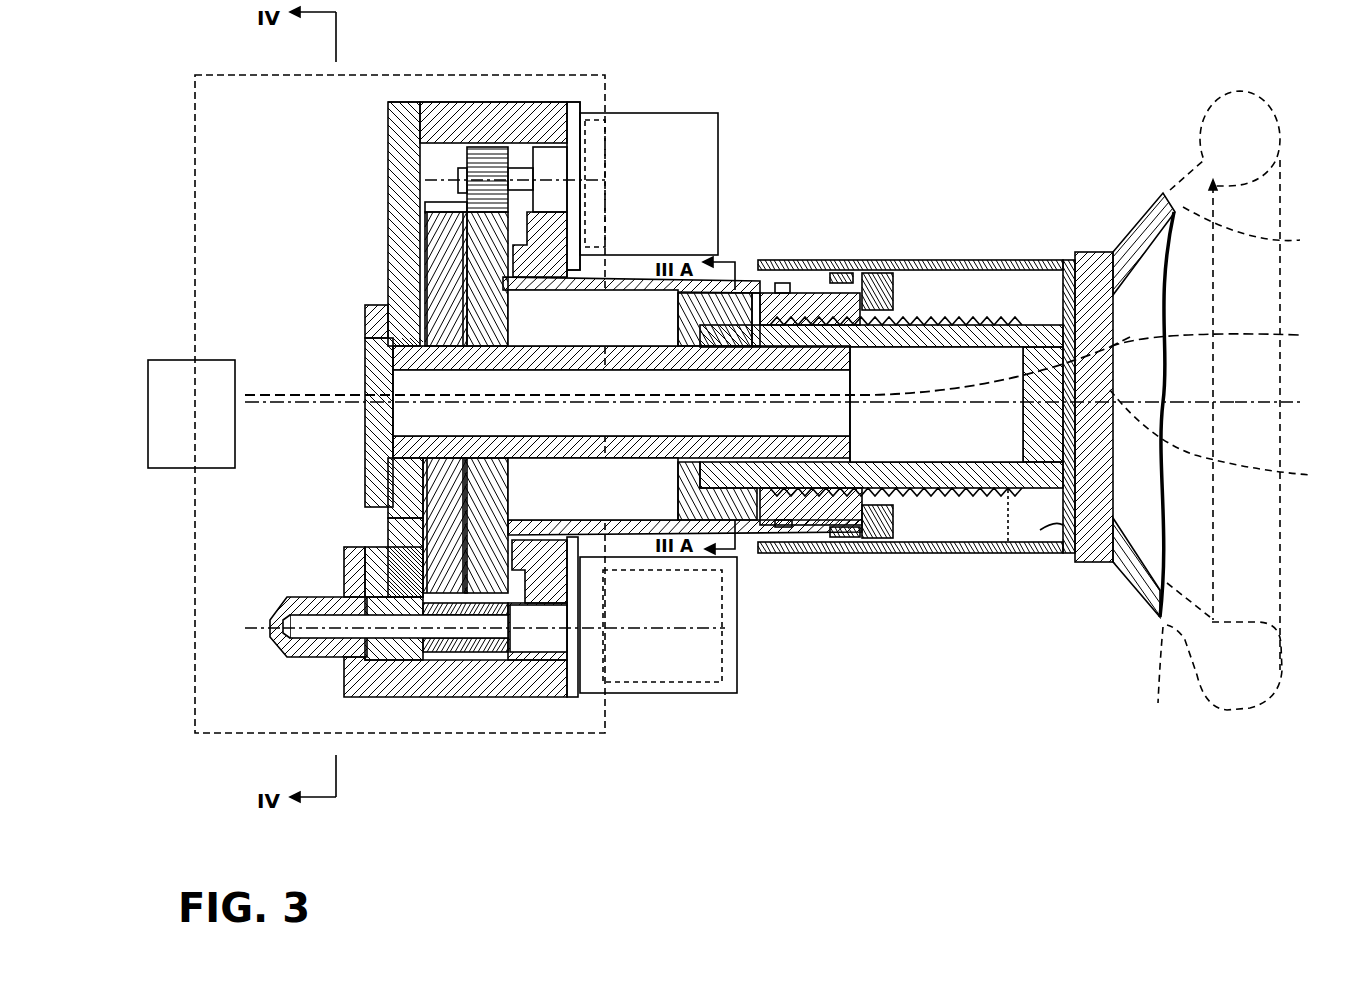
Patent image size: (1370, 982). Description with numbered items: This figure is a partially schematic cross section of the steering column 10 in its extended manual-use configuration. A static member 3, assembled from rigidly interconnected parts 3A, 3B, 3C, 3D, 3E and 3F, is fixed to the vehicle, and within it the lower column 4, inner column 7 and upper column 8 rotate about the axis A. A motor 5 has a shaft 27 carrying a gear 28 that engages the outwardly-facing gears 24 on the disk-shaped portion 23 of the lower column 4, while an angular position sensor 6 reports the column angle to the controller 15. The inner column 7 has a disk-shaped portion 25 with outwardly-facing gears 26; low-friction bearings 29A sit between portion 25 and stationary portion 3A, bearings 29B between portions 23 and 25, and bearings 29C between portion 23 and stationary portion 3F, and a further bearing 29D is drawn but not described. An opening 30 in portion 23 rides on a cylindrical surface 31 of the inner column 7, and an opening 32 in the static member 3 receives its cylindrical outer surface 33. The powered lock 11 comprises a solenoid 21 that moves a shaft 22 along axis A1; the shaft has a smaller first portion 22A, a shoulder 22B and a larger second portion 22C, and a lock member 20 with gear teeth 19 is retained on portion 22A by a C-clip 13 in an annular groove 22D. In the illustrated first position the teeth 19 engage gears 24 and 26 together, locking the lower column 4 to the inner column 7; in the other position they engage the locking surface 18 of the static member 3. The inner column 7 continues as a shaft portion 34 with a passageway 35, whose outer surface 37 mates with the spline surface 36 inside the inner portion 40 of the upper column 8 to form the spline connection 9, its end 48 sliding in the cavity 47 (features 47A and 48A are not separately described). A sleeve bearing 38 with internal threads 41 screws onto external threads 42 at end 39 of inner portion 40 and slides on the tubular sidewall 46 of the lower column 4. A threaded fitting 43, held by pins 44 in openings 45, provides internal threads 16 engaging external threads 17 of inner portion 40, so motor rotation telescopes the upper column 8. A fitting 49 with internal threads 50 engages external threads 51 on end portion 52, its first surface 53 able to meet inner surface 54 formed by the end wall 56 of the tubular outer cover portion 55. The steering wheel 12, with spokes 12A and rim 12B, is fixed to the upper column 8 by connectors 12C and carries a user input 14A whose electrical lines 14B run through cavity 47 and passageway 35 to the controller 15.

The static member 3 is at (391, 405).
The stationary portion 3A is at (487, 697).
The part of static member 3B is at (343, 572).
The part of static member 3C is at (388, 527).
The part of static member 3D is at (375, 470).
The part of static member 3E is at (385, 238).
The stationary portion 3F is at (440, 100).
The lower column 4 is at (742, 277).
The motor 5 is at (660, 113).
The angular position sensor 6 is at (625, 123).
The inner column 7 is at (567, 237).
The upper column 8 is at (995, 318).
The spline type connection 9 is at (948, 495).
The steering column 10 is at (935, 190).
The powered lock 11 is at (672, 698).
The steering wheel 12 is at (1153, 200).
The spokes 12A is at (1239, 469).
The circular rim 12B is at (1278, 152).
The connectors 12C is at (1233, 438).
The C-clip 13 is at (430, 645).
The user input 14A is at (1230, 328).
The electrical lines 14B is at (245, 395).
The controller 15 is at (196, 470).
The internal threads 16 is at (935, 268).
The external threads 17 is at (950, 325).
The locking surface 18 is at (343, 663).
The gear teeth 19 is at (447, 615).
The lock member 20 is at (480, 638).
The solenoid 21 is at (737, 650).
The shaft 22 is at (488, 693).
The first portion 22A is at (482, 652).
The shoulder 22B is at (500, 652).
The second portion 22C is at (578, 697).
The annular groove 22D is at (420, 645).
The disk-shaped portion 23 is at (483, 250).
The outwardly-facing gears 24 is at (467, 205).
The disk-shaped portion 25 is at (440, 228).
The outwardly-facing gears 26 is at (437, 205).
The shaft 27 is at (541, 147).
The gear 28 is at (490, 147).
The low-friction bearings 29A is at (375, 325).
The low-friction bearings 29B is at (463, 323).
The low-friction bearings 29C is at (630, 340).
The bearing 29D is at (527, 550).
The opening 30 is at (517, 345).
The cylindrical surface 31 is at (485, 337).
The opening 32 is at (367, 347).
The cylindrical outer surface 33 is at (368, 368).
The shaft portion 34 is at (573, 345).
The passageway 35 is at (427, 420).
The spline surface 36 is at (945, 352).
The outer surface 37 is at (855, 352).
The sleeve bearing 38 is at (770, 300).
The end 39 is at (705, 470).
The inner portion 40 is at (1082, 300).
The internal threads 41 is at (680, 510).
The external threads 42 is at (700, 497).
The threaded fitting 43 is at (860, 262).
The pins 44 is at (790, 283).
The openings 45 is at (775, 283).
The tubular sidewall 46 is at (708, 283).
The cavity 47 is at (881, 395).
The nut wall 47A is at (1023, 423).
The end 48 is at (853, 440).
The bore wall 48A is at (855, 452).
The fitting 49 is at (893, 517).
The internal threads 50 is at (860, 525).
The external threads 51 is at (827, 523).
The end portion 52 is at (813, 523).
The first surface 53 is at (880, 540).
The inner surface 54 is at (1045, 550).
The tubular outer cover portion 55 is at (1060, 262).
The end wall 56 is at (1095, 262).
The axis A is at (1240, 402).
The axis A1 is at (265, 628).